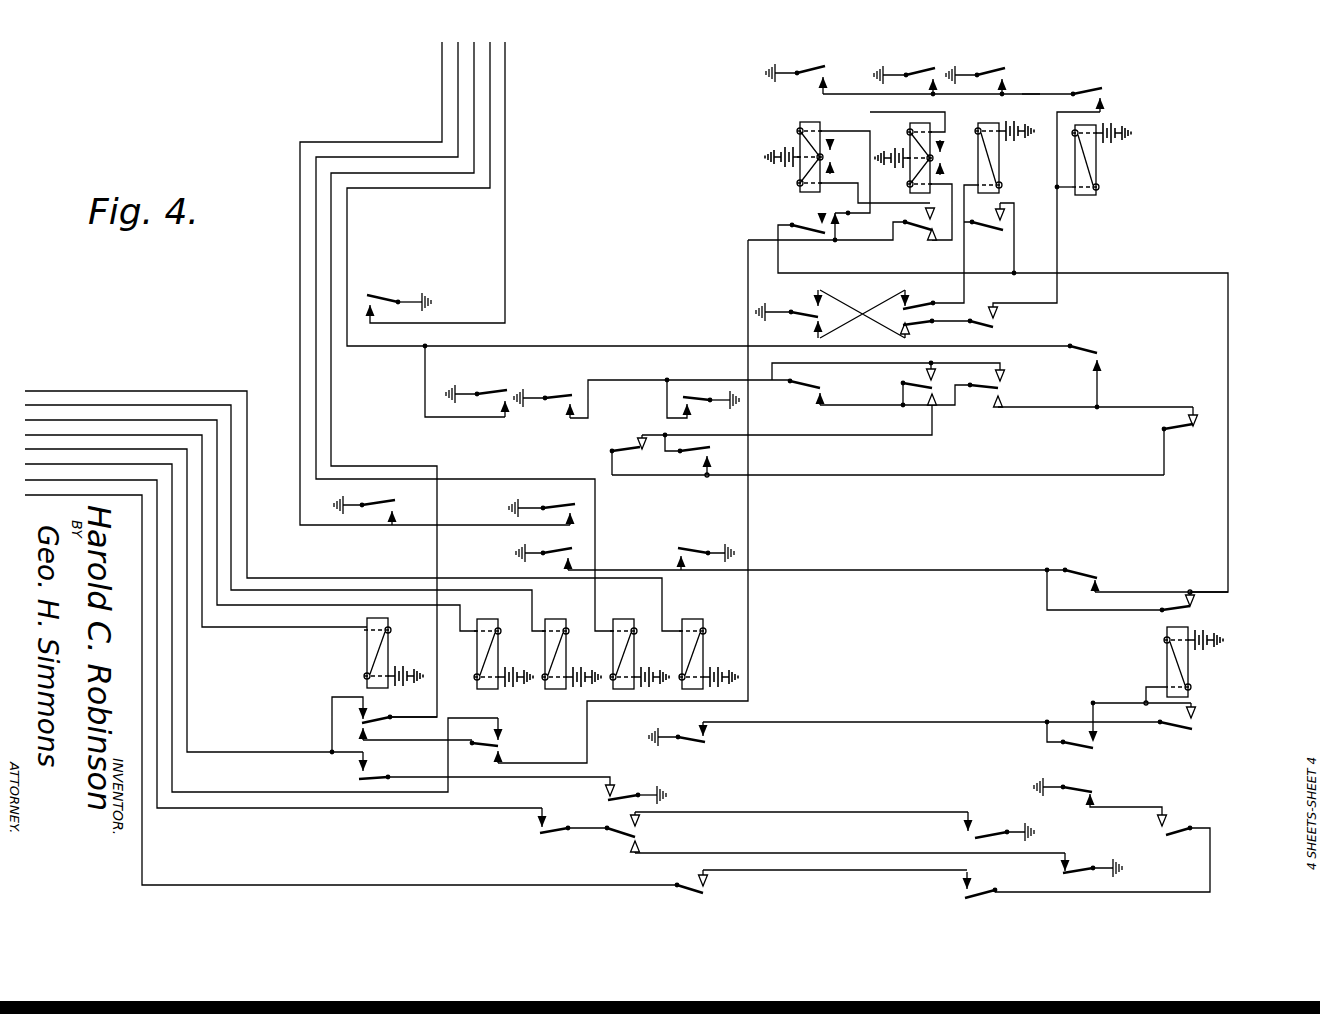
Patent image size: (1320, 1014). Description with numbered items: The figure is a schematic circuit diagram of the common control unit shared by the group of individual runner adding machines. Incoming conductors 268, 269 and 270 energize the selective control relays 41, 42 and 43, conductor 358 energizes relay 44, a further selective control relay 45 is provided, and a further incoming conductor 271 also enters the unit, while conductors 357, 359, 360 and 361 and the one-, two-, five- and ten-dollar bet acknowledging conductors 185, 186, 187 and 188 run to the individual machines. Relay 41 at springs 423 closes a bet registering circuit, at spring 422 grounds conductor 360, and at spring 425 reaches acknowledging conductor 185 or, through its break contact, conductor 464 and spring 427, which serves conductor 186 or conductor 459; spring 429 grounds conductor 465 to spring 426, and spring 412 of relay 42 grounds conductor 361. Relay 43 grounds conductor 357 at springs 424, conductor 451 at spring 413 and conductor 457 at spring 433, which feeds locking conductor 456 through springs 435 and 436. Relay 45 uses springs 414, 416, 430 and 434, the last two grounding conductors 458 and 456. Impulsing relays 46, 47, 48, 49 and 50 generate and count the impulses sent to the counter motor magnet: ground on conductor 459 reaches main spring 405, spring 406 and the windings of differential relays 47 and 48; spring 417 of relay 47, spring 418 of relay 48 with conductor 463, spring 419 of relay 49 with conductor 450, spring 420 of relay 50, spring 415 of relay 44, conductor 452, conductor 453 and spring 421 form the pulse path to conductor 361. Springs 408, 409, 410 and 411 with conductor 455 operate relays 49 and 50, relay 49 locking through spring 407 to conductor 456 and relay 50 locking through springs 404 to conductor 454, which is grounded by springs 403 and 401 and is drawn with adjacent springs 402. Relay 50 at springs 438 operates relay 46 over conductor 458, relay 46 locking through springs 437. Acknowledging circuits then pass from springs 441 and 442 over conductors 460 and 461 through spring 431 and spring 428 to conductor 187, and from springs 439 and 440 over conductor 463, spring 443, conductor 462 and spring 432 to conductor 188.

The selective control relay 41 is at (368, 648).
The selective control relay 42 is at (478, 648).
The selective control relay 43 is at (568, 662).
The relay 44 is at (636, 660).
The selective control relay 45 is at (704, 661).
The impulsing relay 46 is at (1185, 656).
The differential relay 47 is at (800, 145).
The differential relay 48 is at (910, 150).
The relay 49 is at (1000, 152).
The relay 50 is at (1098, 155).
The one-dollar bet acknowledging conductor 185 is at (222, 752).
The two-dollar acknowledging conductor 186 is at (261, 619).
The five-dollar acknowledging conductor 187 is at (283, 635).
The ten-dollar acknowledging conductor 188 is at (257, 885).
The conductor 268 is at (196, 522).
The conductor 269 is at (251, 516).
The conductor 270 is at (285, 509).
The conductor 271 is at (353, 502).
The conductor 357 is at (442, 49).
The conductor 358 is at (458, 60).
The conductor 359 is at (474, 76).
The conductor 360 is at (505, 76).
The conductor 361 is at (490, 63).
The springs 401 is at (920, 66).
The contact 402 is at (910, 65).
The springs 403 is at (983, 65).
The springs 404 is at (1107, 86).
The main spring 405 is at (820, 217).
The spring 406 is at (915, 238).
The spring 407 is at (993, 238).
The spring 408 is at (830, 309).
The spring 409 is at (925, 291).
The spring 410 is at (928, 326).
The spring 411 is at (995, 328).
The spring 412 is at (488, 388).
The spring 413 is at (562, 390).
The spring 414 is at (688, 404).
The spring 415 is at (635, 445).
The spring 416 is at (700, 456).
The spring 417 is at (792, 400).
The spring 418 is at (888, 400).
The spring 419 is at (1005, 392).
The spring 420 is at (1100, 356).
The spring 421 is at (1186, 433).
The spring 422 is at (372, 293).
The springs 423 is at (396, 500).
The springs 424 is at (535, 505).
The spring 425 is at (368, 721).
The spring 426 is at (357, 776).
The spring 427 is at (500, 745).
The spring 428 is at (552, 836).
The spring 429 is at (612, 801).
The spring 430 is at (695, 745).
The spring 431 is at (618, 841).
The spring 432 is at (710, 893).
The spring 433 is at (525, 552).
The spring 434 is at (690, 538).
The spring 435 is at (1085, 570).
The spring 436 is at (1190, 609).
The springs 437 is at (1192, 733).
The springs 438 is at (1092, 750).
The spring 439 is at (1095, 789).
The spring 440 is at (1185, 837).
The spring 441 is at (978, 820).
The spring 442 is at (1062, 879).
The spring 443 is at (965, 894).
The conductor 450 is at (1130, 407).
The conductor 451 is at (680, 370).
The conductor 452 is at (775, 437).
The conductor 453 is at (943, 475).
The conductor 454 is at (1035, 82).
The conductor 455 is at (1060, 222).
The locking conductor 456 is at (1228, 386).
The conductor 457 is at (900, 570).
The conductor 458 is at (930, 722).
The conductor 459 is at (748, 505).
The conductor 460 is at (878, 812).
The conductor 461 is at (888, 853).
The conductor 462 is at (890, 872).
The conductor 463 is at (860, 365).
The conductor 464 is at (383, 740).
The conductor 465 is at (480, 778).